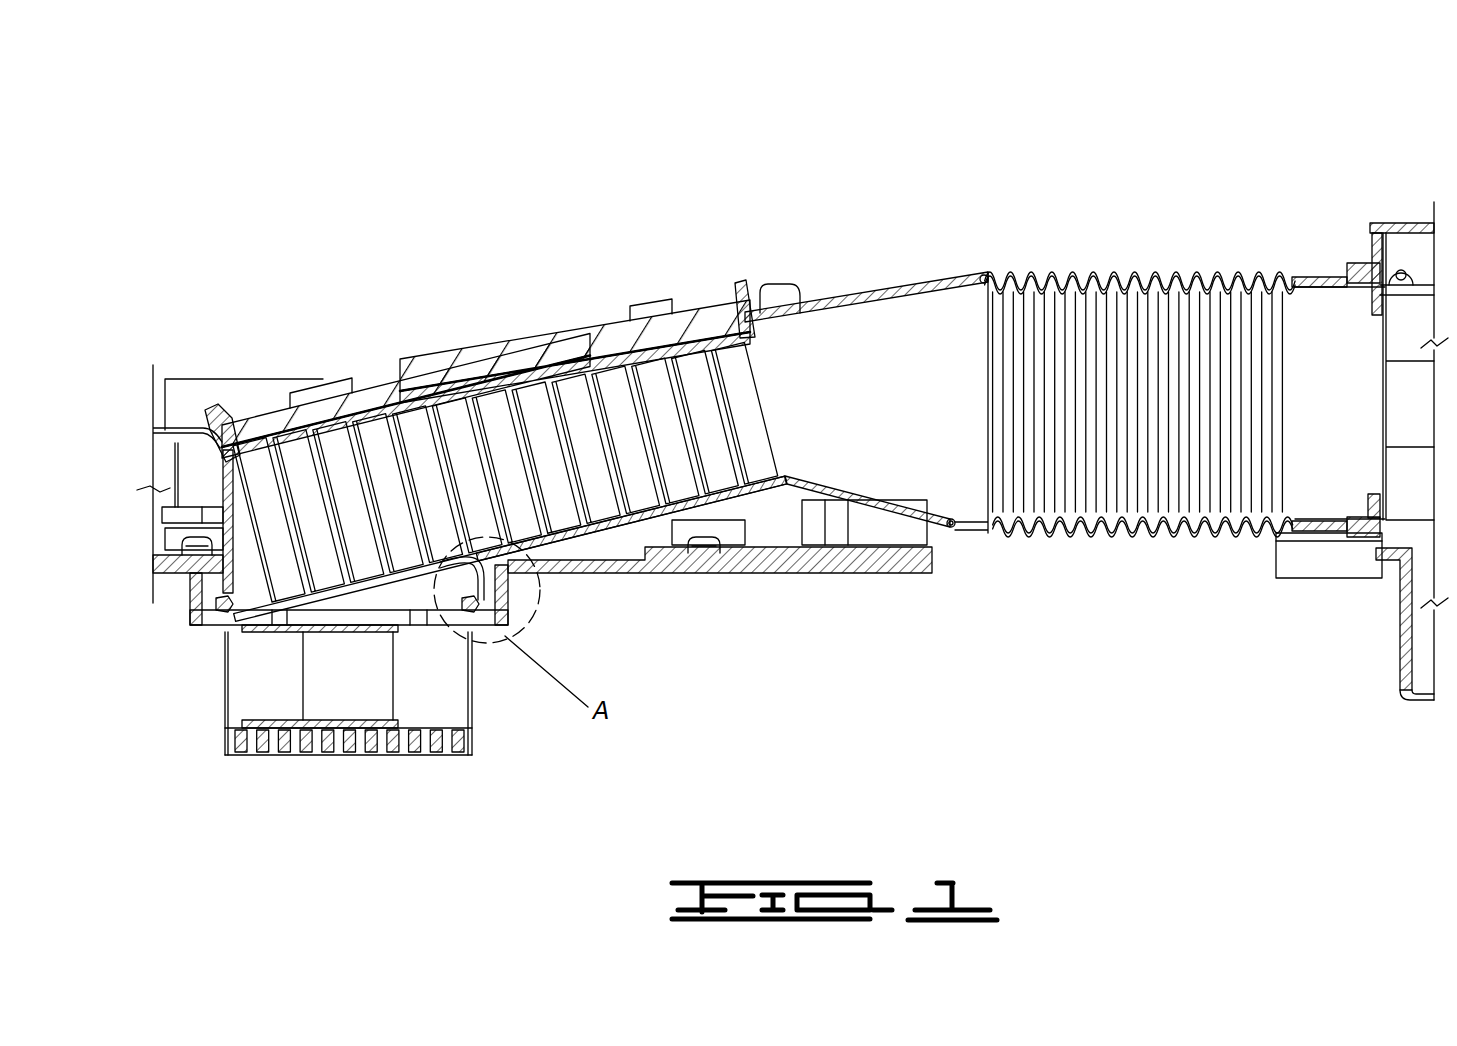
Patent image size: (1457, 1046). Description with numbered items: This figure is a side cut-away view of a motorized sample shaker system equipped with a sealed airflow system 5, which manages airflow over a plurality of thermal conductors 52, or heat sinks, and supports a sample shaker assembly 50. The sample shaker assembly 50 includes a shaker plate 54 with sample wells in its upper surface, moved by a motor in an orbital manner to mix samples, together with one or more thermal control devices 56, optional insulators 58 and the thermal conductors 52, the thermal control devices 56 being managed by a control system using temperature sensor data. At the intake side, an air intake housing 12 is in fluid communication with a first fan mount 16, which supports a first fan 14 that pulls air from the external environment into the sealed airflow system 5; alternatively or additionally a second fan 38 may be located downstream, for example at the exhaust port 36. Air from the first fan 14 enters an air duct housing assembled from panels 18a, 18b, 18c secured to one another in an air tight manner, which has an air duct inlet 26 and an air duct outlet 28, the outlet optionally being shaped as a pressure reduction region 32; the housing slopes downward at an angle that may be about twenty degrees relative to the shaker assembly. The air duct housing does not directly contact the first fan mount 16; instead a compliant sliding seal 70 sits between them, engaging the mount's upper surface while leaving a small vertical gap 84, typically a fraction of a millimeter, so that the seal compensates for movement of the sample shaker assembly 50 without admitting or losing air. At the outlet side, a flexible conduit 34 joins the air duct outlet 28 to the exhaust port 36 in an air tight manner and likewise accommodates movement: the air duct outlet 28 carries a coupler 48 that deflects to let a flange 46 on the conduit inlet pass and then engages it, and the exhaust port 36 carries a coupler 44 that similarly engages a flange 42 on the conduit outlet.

The sealed airflow system 5 is at (1183, 88).
The air intake housing 12 is at (362, 747).
The first fan 14 is at (238, 702).
The first fan mount 16 is at (200, 580).
The panel 18a is at (657, 515).
The panel 18b is at (228, 486).
The panel 18c is at (937, 545).
The air duct inlet 26 is at (408, 576).
The air duct outlet 28 is at (889, 466).
The pressure reduction region 32 is at (983, 265).
The flexible conduit 34 is at (1157, 272).
The exhaust port 36 is at (1327, 482).
The second fan 38 is at (1423, 488).
The flange 42 is at (1322, 277).
The coupler 44 is at (1363, 400).
The flange 46 is at (955, 528).
The coupler 48 is at (951, 523).
The sample shaker assembly 50 is at (510, 337).
The thermal conductors 52 is at (563, 510).
The shaker plate 54 is at (572, 343).
The thermal control devices 56 is at (315, 425).
The insulators 58 is at (485, 375).
The compliant sliding seal 70 is at (348, 598).
The vertical gap 84 is at (227, 612).